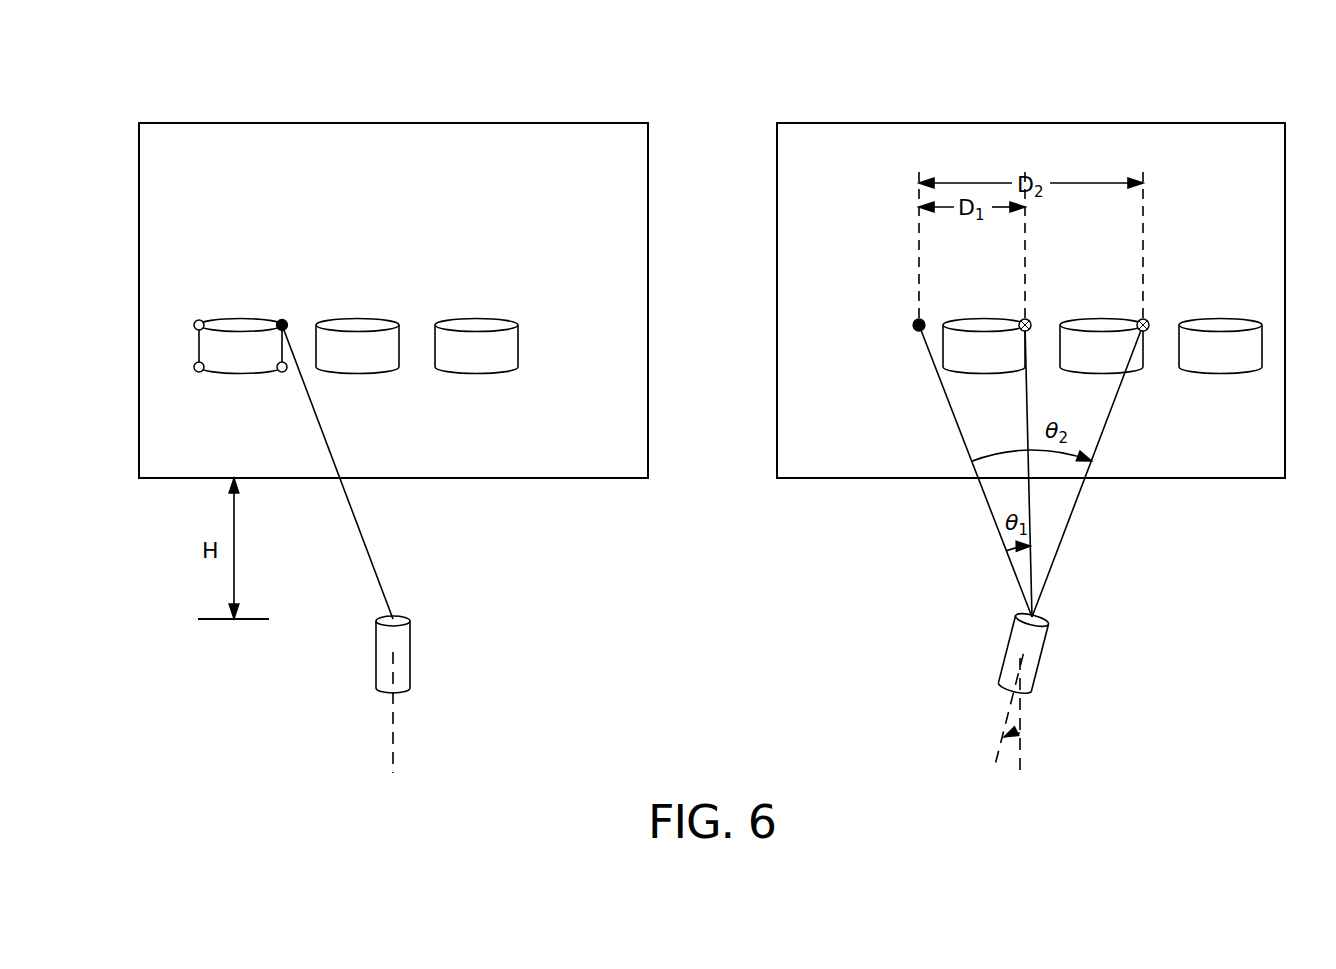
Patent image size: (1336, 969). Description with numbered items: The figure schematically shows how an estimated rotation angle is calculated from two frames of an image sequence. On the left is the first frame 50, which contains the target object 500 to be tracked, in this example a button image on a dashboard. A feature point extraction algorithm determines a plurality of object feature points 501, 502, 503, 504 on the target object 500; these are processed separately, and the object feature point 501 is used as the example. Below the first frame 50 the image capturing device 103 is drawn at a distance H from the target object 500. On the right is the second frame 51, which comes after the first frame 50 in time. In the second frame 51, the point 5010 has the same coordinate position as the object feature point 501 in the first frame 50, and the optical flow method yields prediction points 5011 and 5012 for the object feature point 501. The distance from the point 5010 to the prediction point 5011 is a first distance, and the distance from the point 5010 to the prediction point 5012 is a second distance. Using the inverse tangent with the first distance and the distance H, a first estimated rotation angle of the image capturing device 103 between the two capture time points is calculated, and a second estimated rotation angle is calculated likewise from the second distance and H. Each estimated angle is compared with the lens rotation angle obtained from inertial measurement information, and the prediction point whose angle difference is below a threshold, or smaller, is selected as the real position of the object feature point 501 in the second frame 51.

The first frame 50 is at (375, 123).
The second frame 51 is at (1013, 123).
The target object 500 is at (240, 346).
The object feature point 501 is at (279, 320).
The object feature point 502 is at (196, 320).
The object feature point 503 is at (202, 372).
The object feature point 504 is at (285, 372).
The image capturing device 103 is at (412, 673).
The point 5010 is at (913, 325).
The prediction point 5011 is at (1019, 323).
The prediction point 5012 is at (1137, 323).